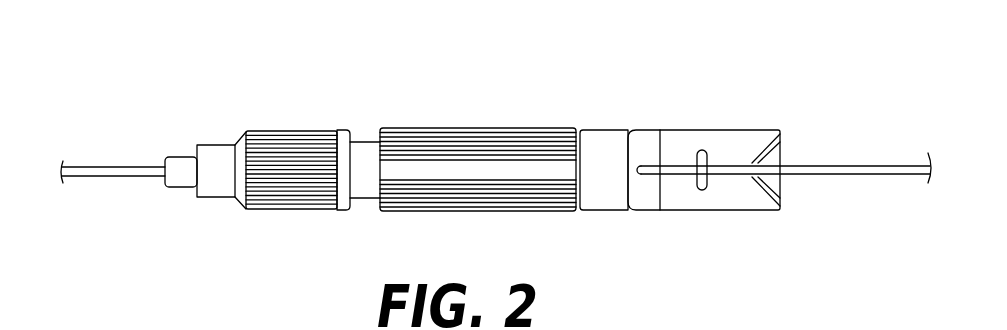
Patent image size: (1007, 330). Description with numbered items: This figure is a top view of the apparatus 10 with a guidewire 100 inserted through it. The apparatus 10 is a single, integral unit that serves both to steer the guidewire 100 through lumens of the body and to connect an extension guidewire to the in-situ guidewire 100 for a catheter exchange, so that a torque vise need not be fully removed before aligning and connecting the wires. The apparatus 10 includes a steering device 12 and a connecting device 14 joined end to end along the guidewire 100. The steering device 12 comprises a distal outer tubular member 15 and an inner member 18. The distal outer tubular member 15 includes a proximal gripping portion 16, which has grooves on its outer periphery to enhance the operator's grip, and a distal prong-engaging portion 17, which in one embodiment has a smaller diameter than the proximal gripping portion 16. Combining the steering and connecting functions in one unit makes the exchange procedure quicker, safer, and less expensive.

The apparatus 10 is at (472, 112).
The steering device 12 is at (397, 120).
The connecting device 14 is at (702, 114).
The distal outer tubular member 15 is at (248, 124).
The proximal gripping portion 16 is at (292, 129).
The distal prong-engaging portion 17 is at (213, 153).
The inner member 18 is at (457, 120).
The guidewire 100 is at (120, 175).